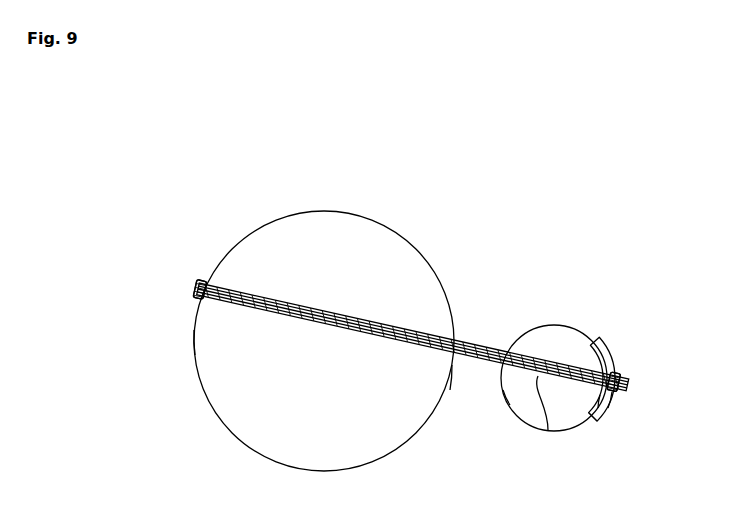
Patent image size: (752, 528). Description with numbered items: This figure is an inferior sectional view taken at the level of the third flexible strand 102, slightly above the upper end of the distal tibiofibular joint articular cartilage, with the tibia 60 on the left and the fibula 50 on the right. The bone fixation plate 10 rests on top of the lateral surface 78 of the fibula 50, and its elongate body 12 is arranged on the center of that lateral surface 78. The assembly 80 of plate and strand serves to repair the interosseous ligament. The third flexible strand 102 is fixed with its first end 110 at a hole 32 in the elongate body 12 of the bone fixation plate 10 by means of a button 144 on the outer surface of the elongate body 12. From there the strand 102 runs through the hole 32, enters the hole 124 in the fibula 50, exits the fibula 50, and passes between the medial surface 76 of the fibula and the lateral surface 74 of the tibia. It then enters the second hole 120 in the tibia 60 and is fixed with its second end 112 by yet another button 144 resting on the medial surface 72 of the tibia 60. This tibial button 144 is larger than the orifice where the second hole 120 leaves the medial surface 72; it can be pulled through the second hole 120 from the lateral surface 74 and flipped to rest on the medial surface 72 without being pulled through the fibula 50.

The bone fixation plate 10 is at (604, 345).
The elongate body 12 is at (597, 424).
The hole 32 is at (616, 401).
The fibula 50 is at (556, 345).
The tibia 60 is at (332, 250).
The medial surface of the tibia 72 is at (196, 345).
The lateral surface of the tibia 74 is at (452, 378).
The medial surface of the fibula 76 is at (500, 393).
The lateral surface of the fibula 78 is at (596, 400).
The assembly 80 is at (564, 236).
The third flexible strand 102 is at (473, 352).
The first end 110 is at (634, 386).
The second end 112 is at (190, 284).
The second hole 120 is at (332, 325).
The hole 124 is at (548, 430).
The button 144 is at (194, 297).